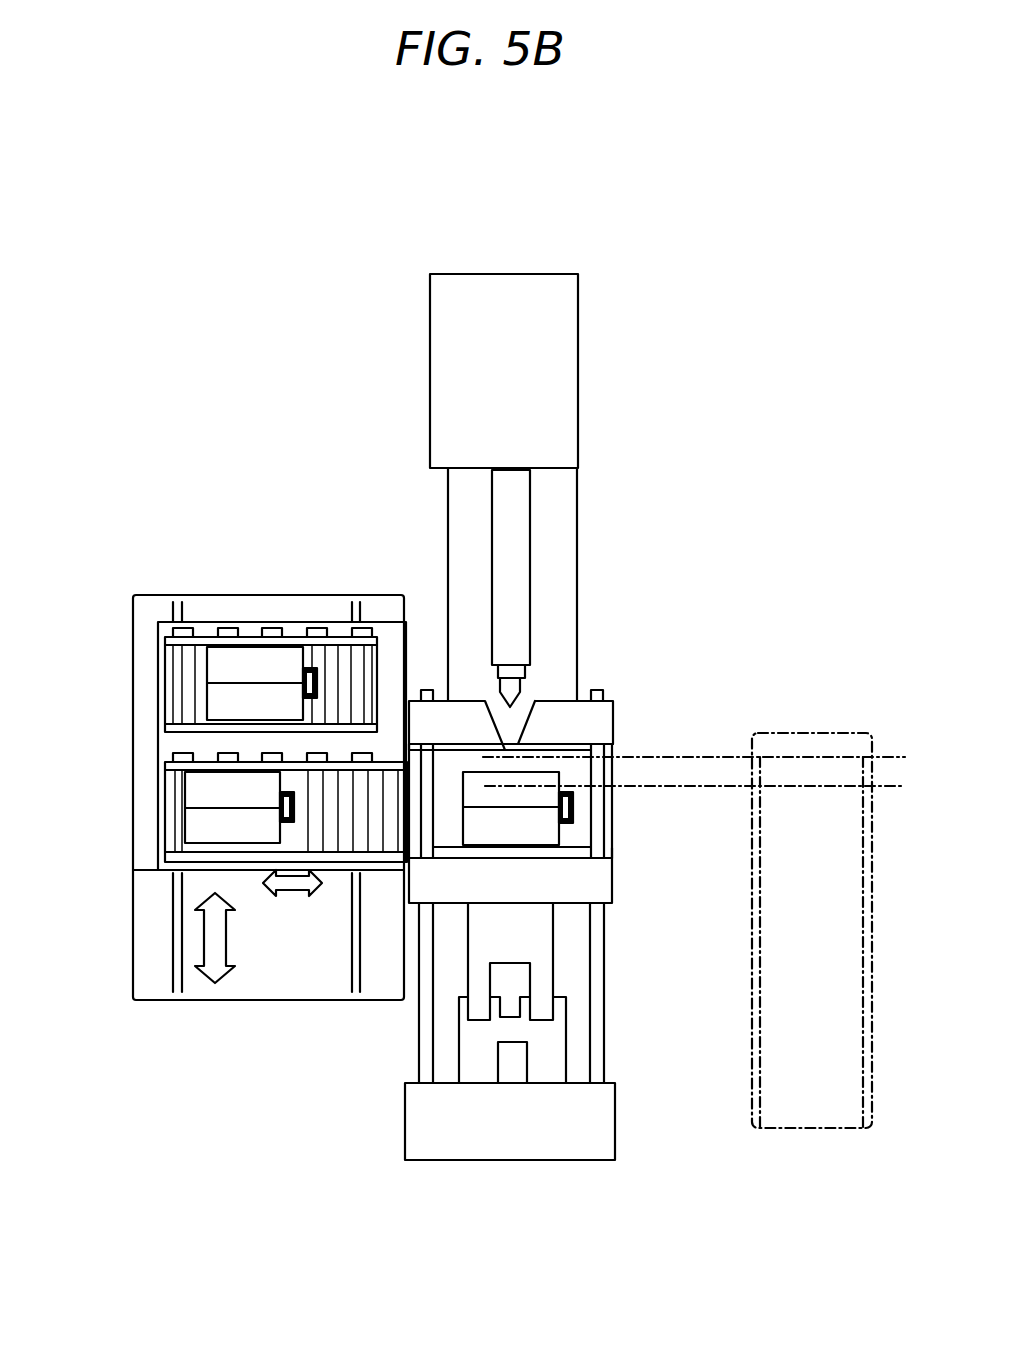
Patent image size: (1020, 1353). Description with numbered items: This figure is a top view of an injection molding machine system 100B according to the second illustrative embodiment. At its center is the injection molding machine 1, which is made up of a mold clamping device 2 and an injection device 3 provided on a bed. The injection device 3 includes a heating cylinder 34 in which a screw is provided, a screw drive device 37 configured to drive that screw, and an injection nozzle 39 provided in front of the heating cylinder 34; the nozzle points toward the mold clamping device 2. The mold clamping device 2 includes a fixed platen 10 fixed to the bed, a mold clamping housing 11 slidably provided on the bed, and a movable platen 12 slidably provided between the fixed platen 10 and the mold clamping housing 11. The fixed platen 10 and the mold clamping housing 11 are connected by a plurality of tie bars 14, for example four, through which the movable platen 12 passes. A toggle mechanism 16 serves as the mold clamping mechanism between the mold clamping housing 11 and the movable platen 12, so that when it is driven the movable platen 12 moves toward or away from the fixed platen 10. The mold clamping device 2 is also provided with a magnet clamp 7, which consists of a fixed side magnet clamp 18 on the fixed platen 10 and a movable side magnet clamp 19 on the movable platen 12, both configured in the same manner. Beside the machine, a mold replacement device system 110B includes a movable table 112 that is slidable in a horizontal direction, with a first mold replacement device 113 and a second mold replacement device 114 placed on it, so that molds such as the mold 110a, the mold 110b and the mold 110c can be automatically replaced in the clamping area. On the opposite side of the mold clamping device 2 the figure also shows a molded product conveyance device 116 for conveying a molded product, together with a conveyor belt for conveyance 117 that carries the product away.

The injection molding machine system 100B is at (818, 205).
The injection molding machine 1 is at (700, 287).
The injection device 3 is at (616, 355).
The screw drive device 37 is at (430, 350).
The heating cylinder 34 is at (492, 507).
The injection nozzle 39 is at (523, 690).
The mold clamping device 2 is at (665, 592).
The fixed platen 10 is at (460, 697).
The magnet clamp 7 is at (648, 695).
The fixed side magnet clamp 18 is at (613, 747).
The tray at welding position 110c is at (530, 770).
The movable platen 12 is at (613, 912).
The movable side magnet clamp 19 is at (617, 853).
The toggle mechanism 16 is at (597, 1018).
The tie bars 14 is at (607, 1065).
The mold clamping housing 11 is at (615, 1142).
The molded product conveyance device 116 is at (725, 767).
The conveyor belt for conveyance 117 is at (808, 1120).
The tray supply device 110B is at (160, 595).
The movable table 112 is at (157, 748).
The first mold replacement device 113 is at (175, 678).
The second mold replacement device 114 is at (167, 823).
The mold 110a is at (247, 650).
The mold 110b is at (197, 833).